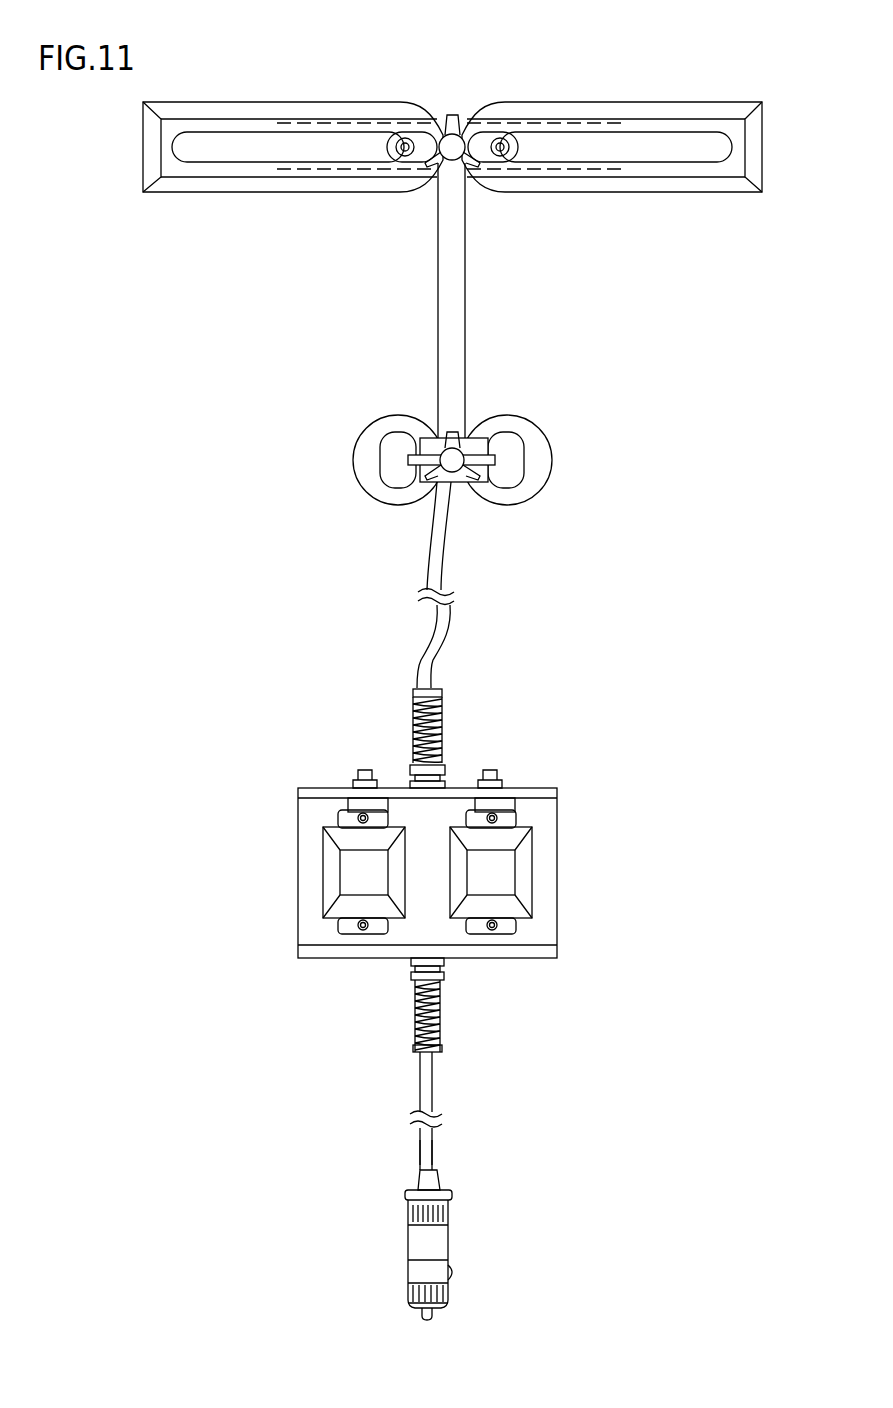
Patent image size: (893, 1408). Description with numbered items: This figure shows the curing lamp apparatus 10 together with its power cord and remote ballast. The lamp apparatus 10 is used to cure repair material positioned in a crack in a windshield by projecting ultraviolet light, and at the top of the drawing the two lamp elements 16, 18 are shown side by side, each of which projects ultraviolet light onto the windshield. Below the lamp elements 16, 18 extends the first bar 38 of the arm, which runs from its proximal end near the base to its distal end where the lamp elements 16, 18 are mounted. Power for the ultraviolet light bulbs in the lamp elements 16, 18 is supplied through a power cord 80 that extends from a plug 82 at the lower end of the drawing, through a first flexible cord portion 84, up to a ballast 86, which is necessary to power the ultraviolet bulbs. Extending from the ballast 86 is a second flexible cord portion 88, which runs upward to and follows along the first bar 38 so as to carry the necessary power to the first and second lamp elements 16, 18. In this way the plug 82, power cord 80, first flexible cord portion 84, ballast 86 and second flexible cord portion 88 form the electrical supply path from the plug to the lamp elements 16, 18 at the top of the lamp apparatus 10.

The lamp apparatus 10 is at (543, 84).
The lamp element 16 is at (268, 190).
The lamp element 18 is at (615, 190).
The first bar 38 is at (465, 308).
The power cord 80 is at (432, 1083).
The plug 82 is at (448, 1237).
The first flexible cord portion 84 is at (420, 1146).
The ballast 86 is at (557, 826).
The second flexible cord portion 88 is at (445, 530).